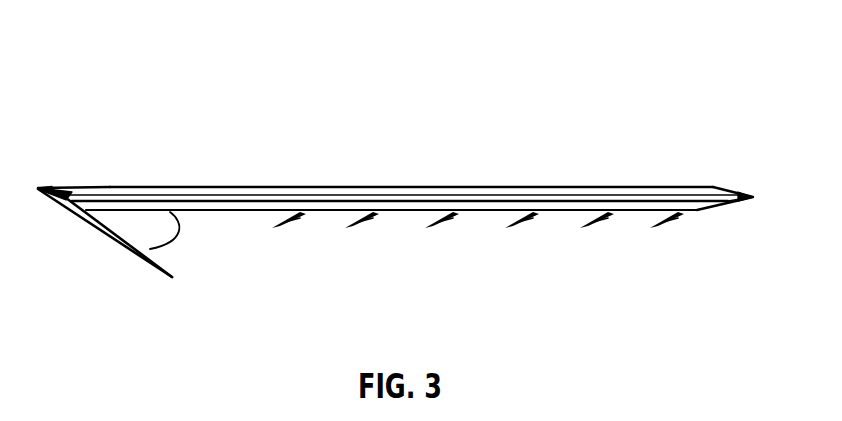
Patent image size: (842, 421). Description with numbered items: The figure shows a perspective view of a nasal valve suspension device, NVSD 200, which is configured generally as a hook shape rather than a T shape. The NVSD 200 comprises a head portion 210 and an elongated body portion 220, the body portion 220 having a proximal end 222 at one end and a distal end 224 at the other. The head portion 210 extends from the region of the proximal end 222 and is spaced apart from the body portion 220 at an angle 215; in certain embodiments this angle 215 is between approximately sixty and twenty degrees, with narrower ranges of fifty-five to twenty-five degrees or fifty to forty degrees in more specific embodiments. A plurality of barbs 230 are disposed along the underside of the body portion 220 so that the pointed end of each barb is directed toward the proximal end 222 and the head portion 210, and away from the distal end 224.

The nasal valve suspension device 200 is at (431, 76).
The head portion 210 is at (87, 220).
The angle 215 is at (164, 231).
The body portion 220 is at (395, 140).
The proximal end 222 is at (80, 188).
The distal end 224 is at (729, 188).
The barbs 230 is at (652, 228).